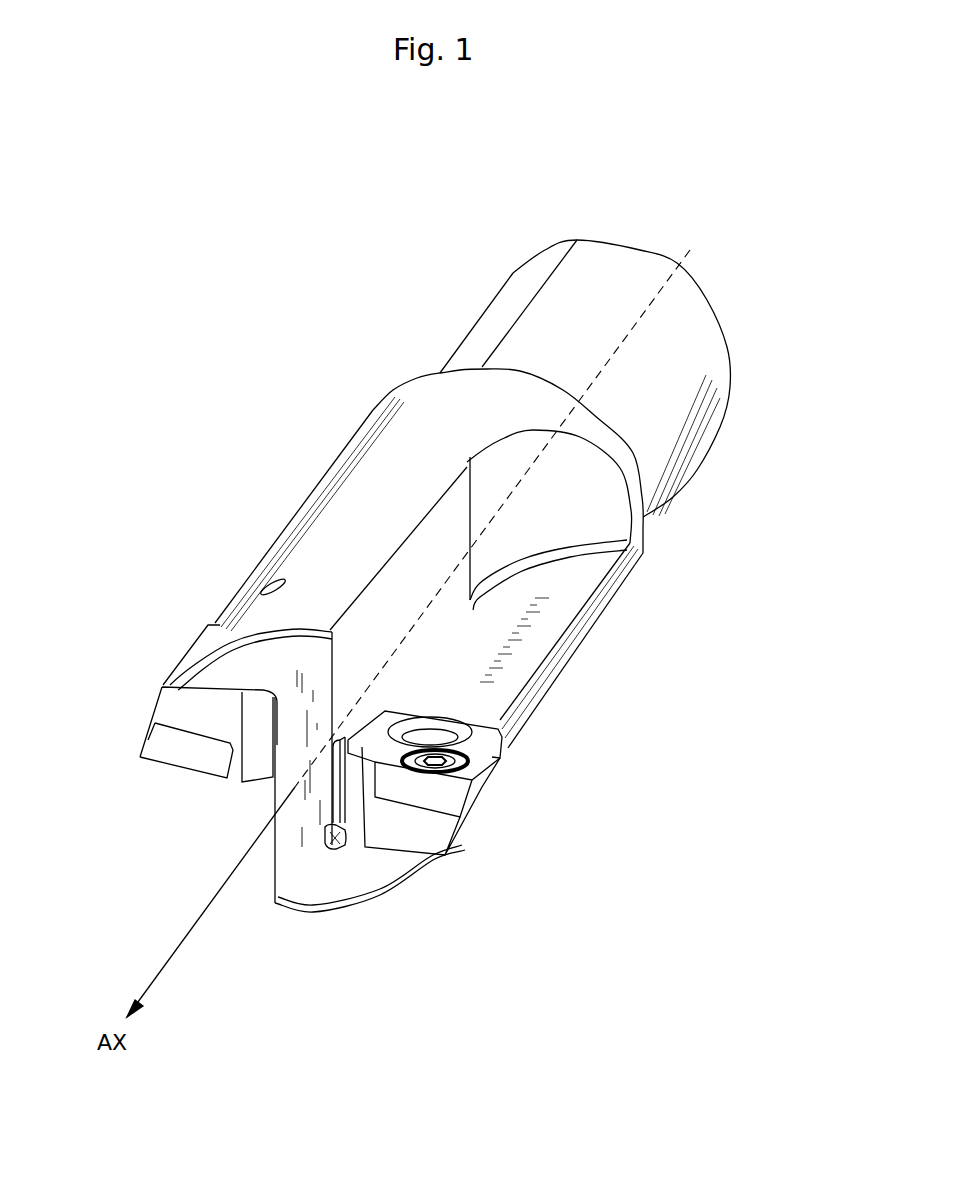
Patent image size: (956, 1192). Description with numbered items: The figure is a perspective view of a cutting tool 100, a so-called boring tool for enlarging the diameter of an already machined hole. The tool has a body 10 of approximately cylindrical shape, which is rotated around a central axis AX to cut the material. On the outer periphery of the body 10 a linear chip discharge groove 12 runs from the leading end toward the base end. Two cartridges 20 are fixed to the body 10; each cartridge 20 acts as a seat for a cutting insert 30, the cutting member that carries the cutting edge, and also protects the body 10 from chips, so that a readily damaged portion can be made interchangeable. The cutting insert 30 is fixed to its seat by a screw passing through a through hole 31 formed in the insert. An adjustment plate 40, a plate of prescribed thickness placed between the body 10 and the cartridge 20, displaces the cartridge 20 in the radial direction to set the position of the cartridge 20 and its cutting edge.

The cutting tool 100 is at (328, 294).
The body 10 is at (690, 330).
The chip discharge groove 12 is at (567, 492).
The cartridge 20 is at (190, 698).
The cutting insert 30 is at (173, 760).
The through hole 31 is at (403, 720).
The adjustment plate 40 is at (340, 843).